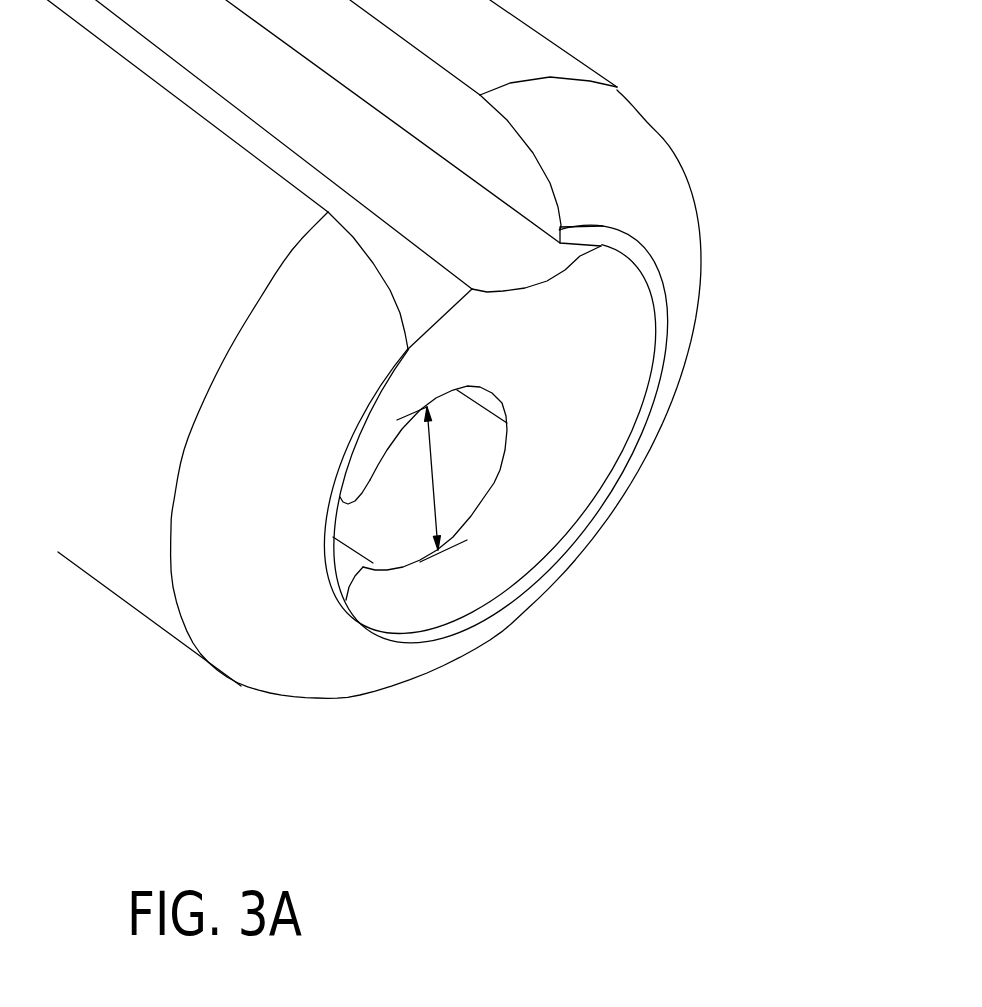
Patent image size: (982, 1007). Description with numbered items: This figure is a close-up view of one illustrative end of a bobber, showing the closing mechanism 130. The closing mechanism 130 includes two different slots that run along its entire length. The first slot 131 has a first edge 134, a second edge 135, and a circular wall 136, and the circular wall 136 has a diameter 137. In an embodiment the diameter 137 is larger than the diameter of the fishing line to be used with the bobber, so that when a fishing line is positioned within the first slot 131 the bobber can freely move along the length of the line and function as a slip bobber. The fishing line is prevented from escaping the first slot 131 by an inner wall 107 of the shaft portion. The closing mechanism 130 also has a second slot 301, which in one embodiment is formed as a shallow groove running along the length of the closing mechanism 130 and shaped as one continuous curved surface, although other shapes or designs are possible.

The inner wall 107 is at (331, 410).
The closing mechanism 130 is at (509, 387).
The first slot 131 is at (593, 479).
The first edge 134 is at (235, 621).
The second edge 135 is at (517, 699).
The circular wall 136 is at (578, 534).
The diameter 137 is at (535, 566).
The second slot 301 is at (583, 434).